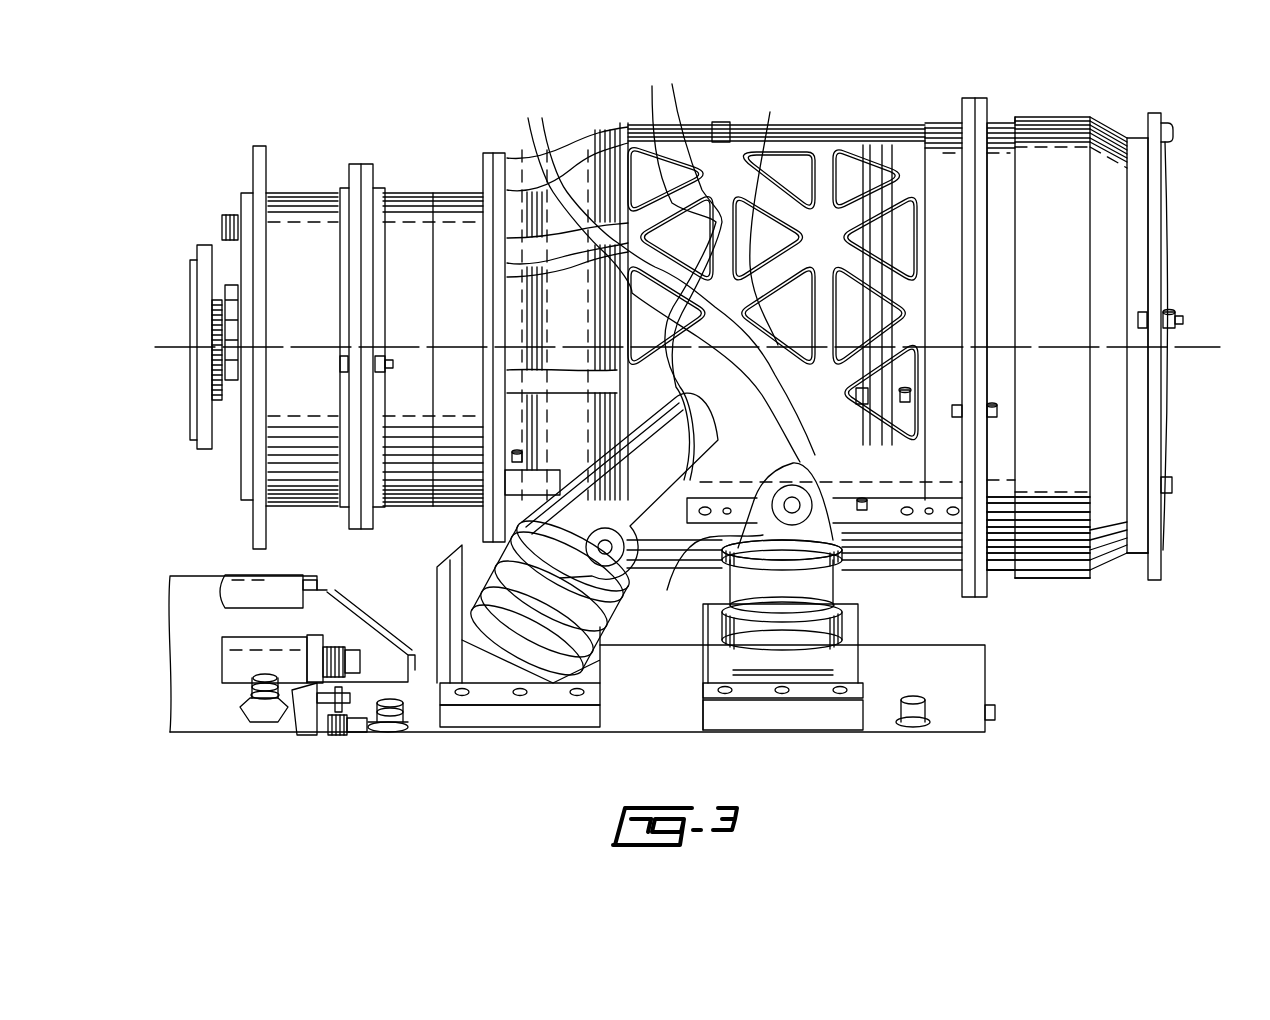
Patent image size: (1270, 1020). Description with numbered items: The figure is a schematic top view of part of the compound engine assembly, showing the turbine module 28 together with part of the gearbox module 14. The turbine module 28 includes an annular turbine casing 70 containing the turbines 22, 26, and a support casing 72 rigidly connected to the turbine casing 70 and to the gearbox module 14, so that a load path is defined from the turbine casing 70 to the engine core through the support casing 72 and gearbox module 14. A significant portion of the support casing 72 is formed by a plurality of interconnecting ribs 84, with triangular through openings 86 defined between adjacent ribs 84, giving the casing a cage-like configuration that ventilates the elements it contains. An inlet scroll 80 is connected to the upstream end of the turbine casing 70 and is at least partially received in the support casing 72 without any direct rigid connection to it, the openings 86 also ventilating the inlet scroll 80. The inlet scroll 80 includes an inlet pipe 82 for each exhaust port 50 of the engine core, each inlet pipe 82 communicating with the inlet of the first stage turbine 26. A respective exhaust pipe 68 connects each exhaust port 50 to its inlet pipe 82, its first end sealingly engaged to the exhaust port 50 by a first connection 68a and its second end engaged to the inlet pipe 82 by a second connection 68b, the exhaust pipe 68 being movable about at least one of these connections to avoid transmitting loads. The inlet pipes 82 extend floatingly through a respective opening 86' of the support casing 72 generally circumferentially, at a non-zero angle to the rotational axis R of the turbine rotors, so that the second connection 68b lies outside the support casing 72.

The gearbox module 14 is at (352, 152).
The turbine module 28 is at (984, 88).
The turbine casing 70 is at (1055, 115).
The support casing 72 is at (722, 124).
The inlet scroll 80 is at (797, 298).
The ribs 84 is at (700, 329).
The openings 86 is at (770, 217).
The opening 86' is at (667, 277).
The inlet pipe 82 is at (643, 503).
The exhaust pipe 68 is at (500, 603).
The first connection 68a is at (813, 640).
The second connection 68b is at (848, 572).
The exhaust port 50 is at (723, 668).
The turbine 22 is at (1053, 563).
The first stage turbine 26 is at (1067, 537).
The rotational axis R is at (1185, 347).